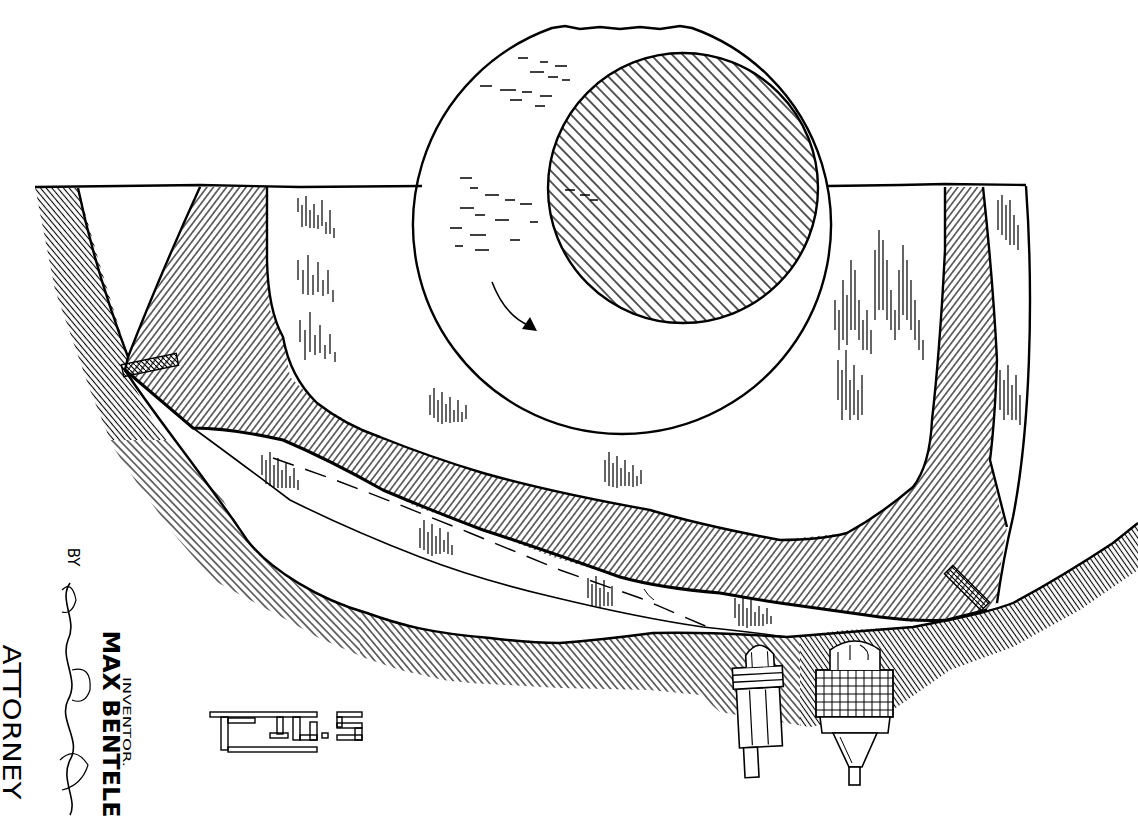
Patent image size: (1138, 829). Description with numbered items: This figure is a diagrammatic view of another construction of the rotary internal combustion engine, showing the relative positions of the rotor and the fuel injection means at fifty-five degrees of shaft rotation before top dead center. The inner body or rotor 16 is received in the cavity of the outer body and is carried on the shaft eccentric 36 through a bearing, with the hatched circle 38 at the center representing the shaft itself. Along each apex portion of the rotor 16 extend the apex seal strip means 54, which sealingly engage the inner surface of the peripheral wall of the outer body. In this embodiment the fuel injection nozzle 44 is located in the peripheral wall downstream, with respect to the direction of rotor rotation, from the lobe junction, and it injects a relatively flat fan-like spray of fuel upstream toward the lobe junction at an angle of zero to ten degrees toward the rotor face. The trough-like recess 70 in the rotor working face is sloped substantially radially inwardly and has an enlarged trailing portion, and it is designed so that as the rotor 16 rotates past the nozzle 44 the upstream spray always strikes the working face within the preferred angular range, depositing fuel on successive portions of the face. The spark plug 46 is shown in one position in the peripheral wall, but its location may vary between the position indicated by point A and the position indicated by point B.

The inner body or rotor 16 is at (810, 402).
The shaft eccentric 36 is at (628, 363).
The shaft 38 is at (697, 149).
The fuel injection nozzle 44 is at (740, 727).
The spark plug 46 is at (894, 705).
The apex seal strip means 54 is at (122, 366).
The trough-like recess 70 is at (232, 212).
The point A is at (925, 628).
The point B is at (560, 643).